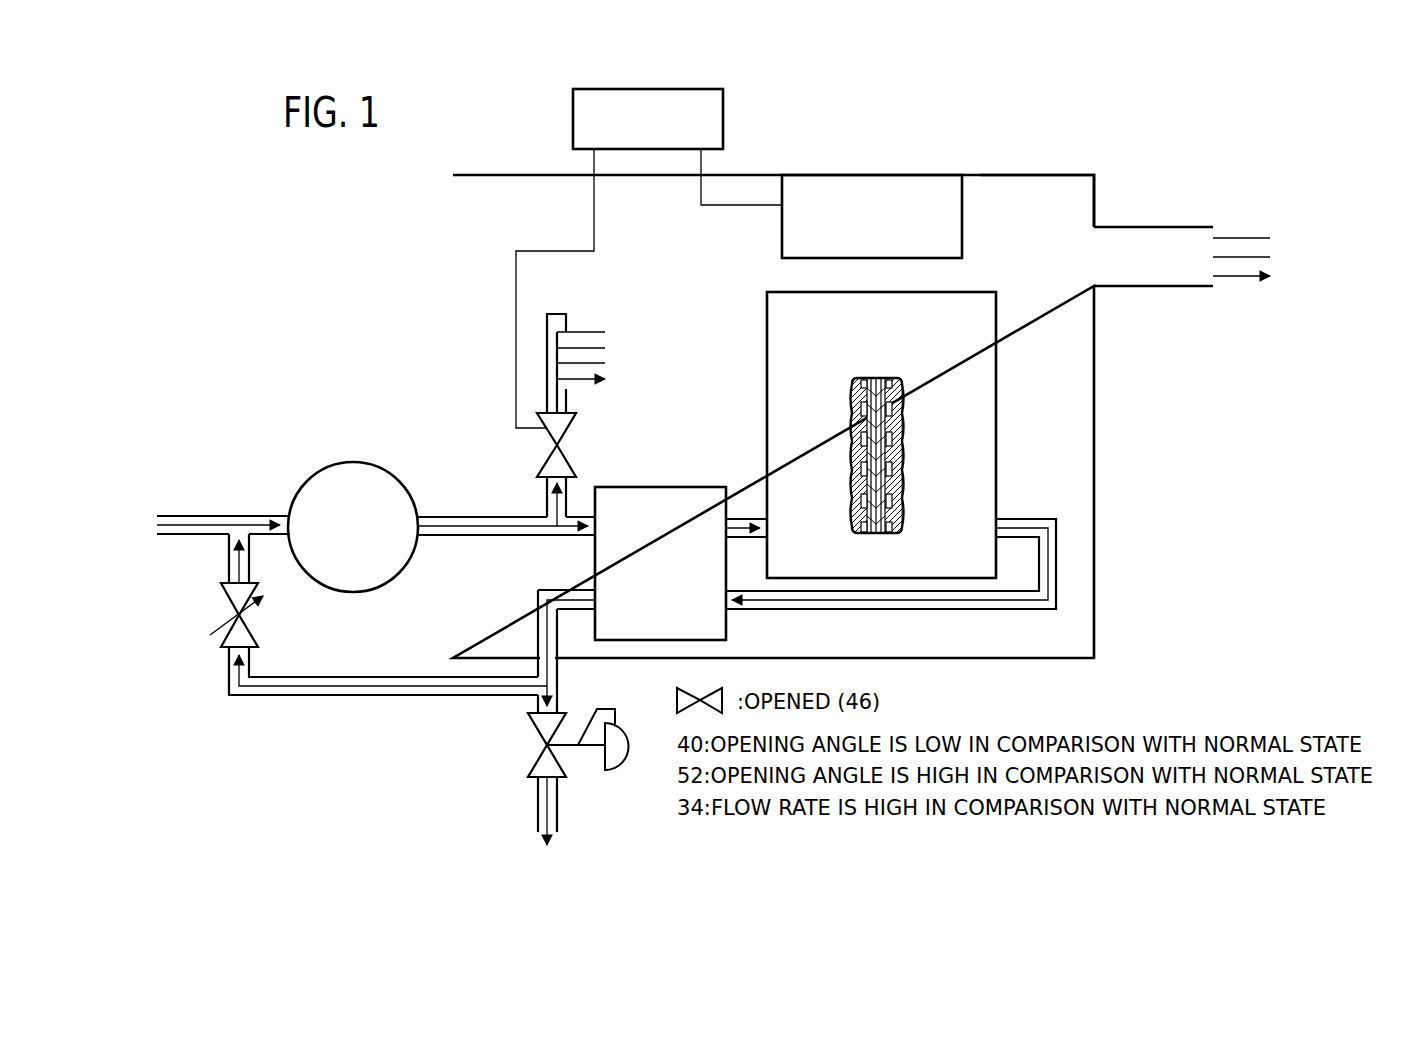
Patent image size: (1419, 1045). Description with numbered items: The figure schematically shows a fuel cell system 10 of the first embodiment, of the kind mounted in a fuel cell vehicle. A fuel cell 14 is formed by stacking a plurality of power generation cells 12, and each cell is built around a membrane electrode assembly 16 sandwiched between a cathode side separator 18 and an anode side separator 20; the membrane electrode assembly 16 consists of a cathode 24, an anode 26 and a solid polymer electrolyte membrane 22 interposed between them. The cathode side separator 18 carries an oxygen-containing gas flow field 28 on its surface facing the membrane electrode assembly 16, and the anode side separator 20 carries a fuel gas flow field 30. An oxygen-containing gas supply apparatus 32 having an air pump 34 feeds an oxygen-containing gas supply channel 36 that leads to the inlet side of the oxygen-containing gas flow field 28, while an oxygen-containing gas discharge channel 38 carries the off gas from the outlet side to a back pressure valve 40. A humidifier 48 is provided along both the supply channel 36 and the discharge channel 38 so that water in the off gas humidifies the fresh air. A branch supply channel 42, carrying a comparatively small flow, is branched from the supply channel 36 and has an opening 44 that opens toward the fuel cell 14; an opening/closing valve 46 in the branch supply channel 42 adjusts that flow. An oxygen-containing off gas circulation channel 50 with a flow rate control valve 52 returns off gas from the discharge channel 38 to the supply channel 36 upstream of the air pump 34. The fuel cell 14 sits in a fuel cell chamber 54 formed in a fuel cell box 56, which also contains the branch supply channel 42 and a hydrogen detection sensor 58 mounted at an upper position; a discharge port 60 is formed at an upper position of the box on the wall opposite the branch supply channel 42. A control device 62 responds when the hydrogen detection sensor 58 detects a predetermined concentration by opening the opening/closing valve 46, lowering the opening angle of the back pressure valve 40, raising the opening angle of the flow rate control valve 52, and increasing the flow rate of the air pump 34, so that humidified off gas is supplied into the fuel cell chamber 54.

The fuel cell system 10 is at (318, 180).
The power generation cell 12 is at (874, 410).
The fuel cell 14 is at (764, 288).
The membrane electrode assembly 16 is at (874, 415).
The cathode side separator 18 is at (852, 394).
The anode side separator 20 is at (903, 394).
The solid polymer electrolyte membrane 22 is at (878, 378).
The cathode 24 is at (868, 380).
The anode 26 is at (884, 380).
The oxygen-containing gas flow field 28 is at (858, 472).
The fuel gas flow field 30 is at (896, 472).
The oxygen-containing gas supply apparatus 32 is at (360, 495).
The air pump 34 is at (408, 485).
The oxygen-containing gas supply channel 36 is at (507, 538).
The oxygen-containing gas discharge channel 38 is at (830, 609).
The back pressure valve 40 is at (528, 732).
The branch supply channel 42 is at (547, 357).
The opening 44 is at (566, 325).
The opening/closing valve 46 is at (537, 458).
The humidifier 48 is at (700, 487).
The oxygen-containing off gas circulation channel 50 is at (398, 677).
The flow rate control valve 52 is at (221, 600).
The fuel cell chamber 54 is at (1058, 188).
The fuel cell box 56 is at (509, 175).
The hydrogen detection sensor 58 is at (962, 195).
The discharge port 60 is at (1150, 236).
The control device 62 is at (723, 105).